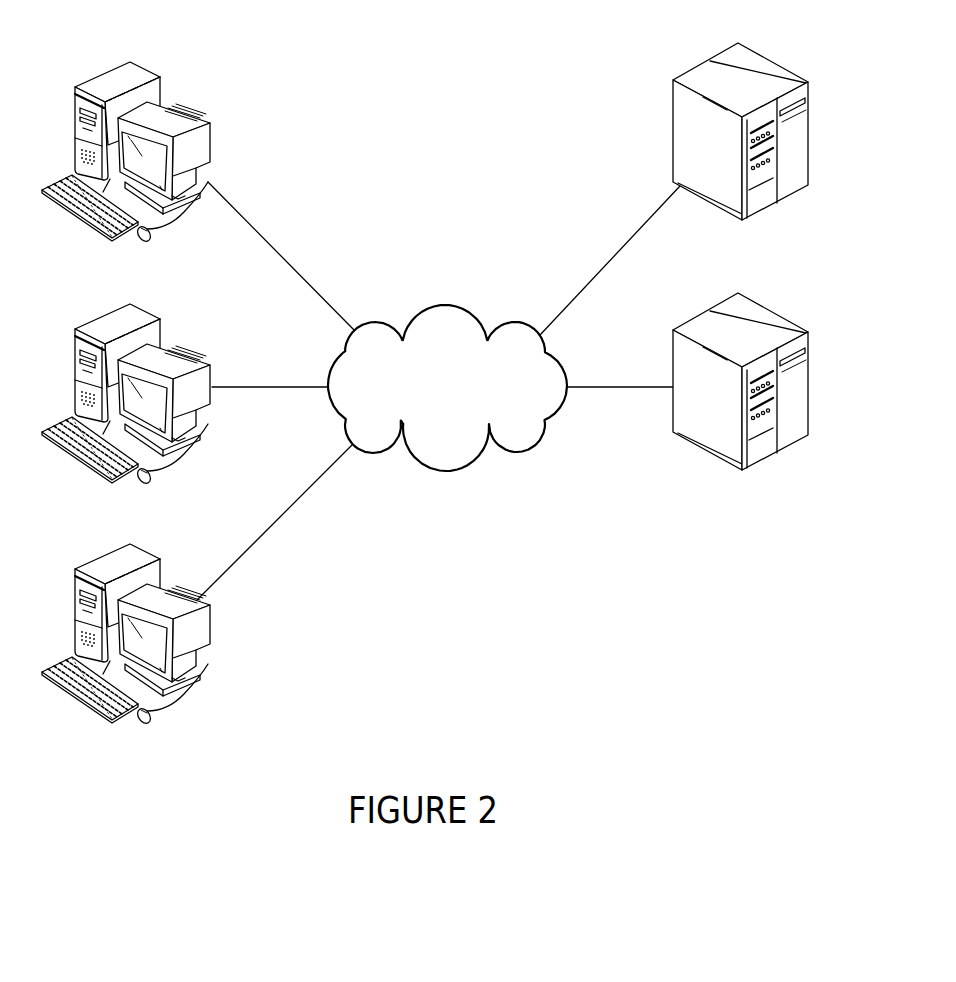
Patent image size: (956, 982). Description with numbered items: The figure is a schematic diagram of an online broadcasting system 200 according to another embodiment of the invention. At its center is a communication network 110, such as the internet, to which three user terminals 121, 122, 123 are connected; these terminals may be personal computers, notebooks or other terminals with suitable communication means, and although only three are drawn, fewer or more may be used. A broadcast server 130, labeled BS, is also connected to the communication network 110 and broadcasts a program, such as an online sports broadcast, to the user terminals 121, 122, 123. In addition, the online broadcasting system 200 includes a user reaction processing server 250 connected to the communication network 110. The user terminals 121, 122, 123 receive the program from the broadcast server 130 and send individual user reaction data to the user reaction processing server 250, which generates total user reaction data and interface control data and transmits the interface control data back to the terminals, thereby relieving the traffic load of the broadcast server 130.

The online broadcasting system 200 is at (478, 100).
The user terminal 121 is at (102, 77).
The user terminal 122 is at (102, 319).
The user terminal 123 is at (102, 559).
The communication network 110 is at (445, 303).
The user reaction processing server 250 is at (767, 62).
The broadcast server 130 is at (767, 312).